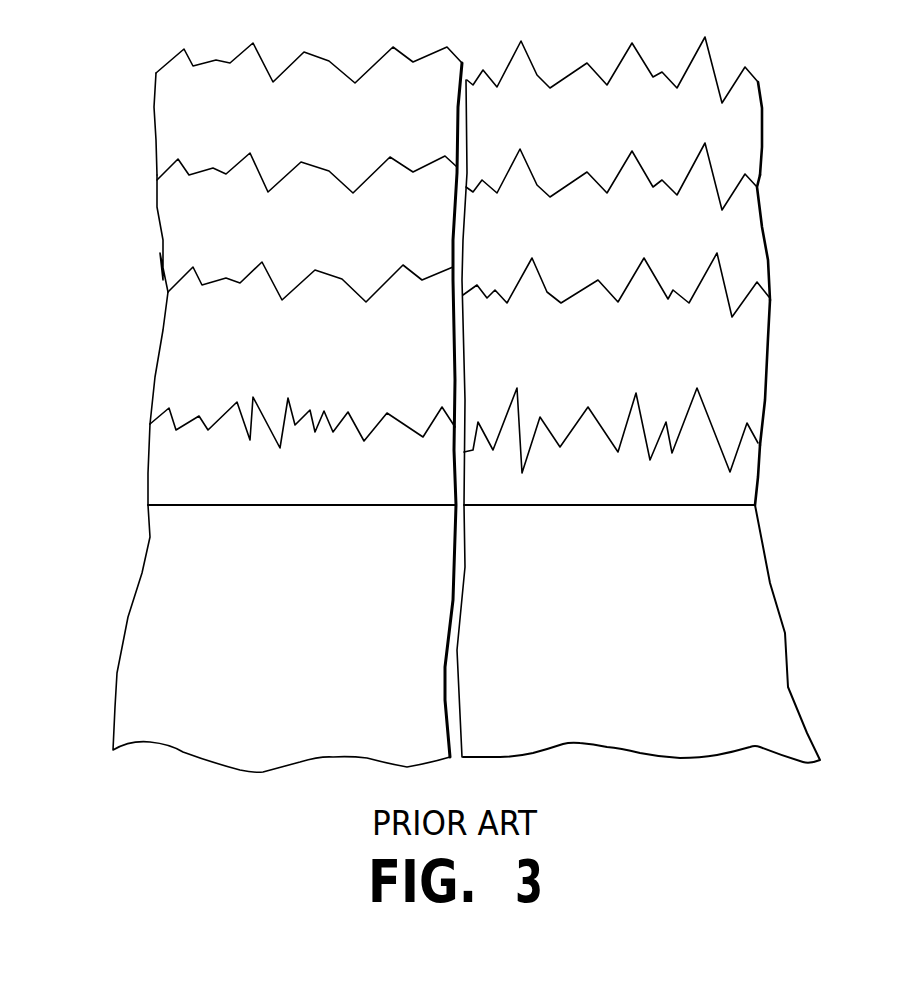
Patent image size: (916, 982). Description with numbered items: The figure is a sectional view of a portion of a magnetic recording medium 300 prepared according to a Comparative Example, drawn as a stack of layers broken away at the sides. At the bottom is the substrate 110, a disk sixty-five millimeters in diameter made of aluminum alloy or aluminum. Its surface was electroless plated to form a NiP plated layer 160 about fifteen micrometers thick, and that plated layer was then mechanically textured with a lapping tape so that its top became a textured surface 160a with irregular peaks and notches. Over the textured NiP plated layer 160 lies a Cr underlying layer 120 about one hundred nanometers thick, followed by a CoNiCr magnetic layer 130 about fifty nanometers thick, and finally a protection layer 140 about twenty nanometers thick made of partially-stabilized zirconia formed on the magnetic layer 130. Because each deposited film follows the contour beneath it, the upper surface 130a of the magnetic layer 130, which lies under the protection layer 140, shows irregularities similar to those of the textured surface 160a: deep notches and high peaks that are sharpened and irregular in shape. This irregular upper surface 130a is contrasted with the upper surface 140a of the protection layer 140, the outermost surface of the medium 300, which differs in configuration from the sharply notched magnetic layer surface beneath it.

The magnetic recording medium 300 is at (712, 763).
The substrate 110 is at (785, 635).
The NiP plated layer 160 is at (758, 477).
The textured surface 160a is at (707, 403).
The Cr underlying layer 120 is at (768, 338).
The CoNiCr magnetic layer 130 is at (763, 227).
The upper surface of the magnetic layer 130a is at (713, 158).
The protection layer 140 is at (762, 108).
The upper surface of the protection layer 140a is at (710, 57).